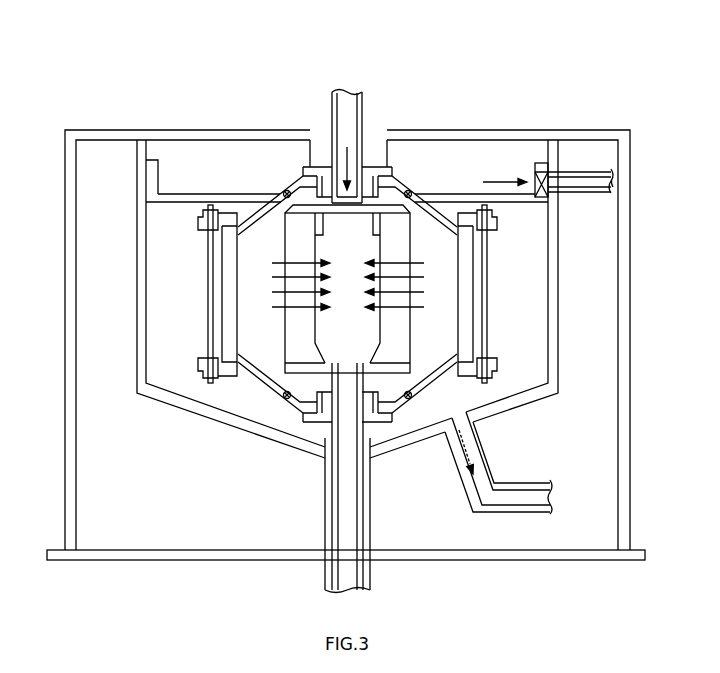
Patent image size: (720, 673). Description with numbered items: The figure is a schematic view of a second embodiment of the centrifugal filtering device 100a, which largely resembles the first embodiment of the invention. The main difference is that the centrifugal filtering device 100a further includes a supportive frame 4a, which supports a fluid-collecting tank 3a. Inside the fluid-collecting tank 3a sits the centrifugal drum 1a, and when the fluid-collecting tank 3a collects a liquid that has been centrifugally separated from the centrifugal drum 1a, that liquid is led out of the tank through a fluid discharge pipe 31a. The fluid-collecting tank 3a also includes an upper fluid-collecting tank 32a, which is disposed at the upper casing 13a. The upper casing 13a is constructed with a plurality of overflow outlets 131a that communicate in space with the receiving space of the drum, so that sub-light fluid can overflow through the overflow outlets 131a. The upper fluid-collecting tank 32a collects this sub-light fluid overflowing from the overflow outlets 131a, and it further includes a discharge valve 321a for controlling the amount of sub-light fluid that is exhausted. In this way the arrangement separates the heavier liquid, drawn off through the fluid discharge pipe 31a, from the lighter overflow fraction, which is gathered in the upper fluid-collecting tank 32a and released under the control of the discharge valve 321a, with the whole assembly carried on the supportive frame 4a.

The centrifugal filtering device 100a is at (128, 76).
The centrifugal drum 1a is at (202, 279).
The fluid-collecting tank 3a is at (558, 249).
The supportive frame 4a is at (565, 561).
The upper casing 13a is at (444, 210).
The overflow outlets 131a is at (409, 183).
The fluid discharge pipe 31a is at (493, 446).
The upper fluid-collecting tank 32a is at (156, 157).
The discharge valve 321a is at (531, 172).